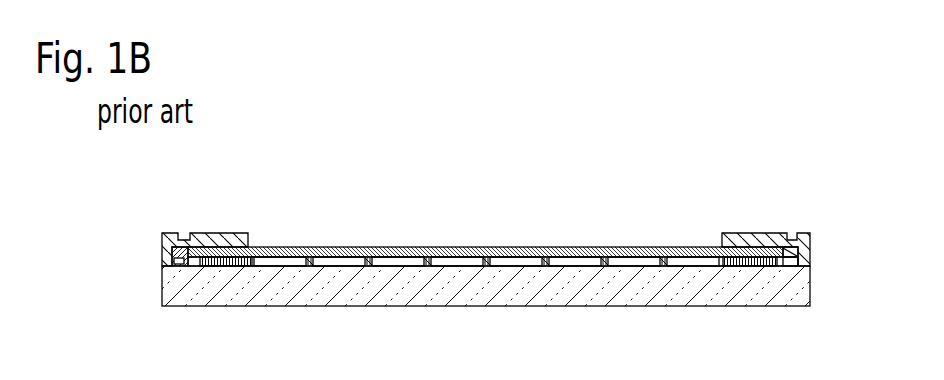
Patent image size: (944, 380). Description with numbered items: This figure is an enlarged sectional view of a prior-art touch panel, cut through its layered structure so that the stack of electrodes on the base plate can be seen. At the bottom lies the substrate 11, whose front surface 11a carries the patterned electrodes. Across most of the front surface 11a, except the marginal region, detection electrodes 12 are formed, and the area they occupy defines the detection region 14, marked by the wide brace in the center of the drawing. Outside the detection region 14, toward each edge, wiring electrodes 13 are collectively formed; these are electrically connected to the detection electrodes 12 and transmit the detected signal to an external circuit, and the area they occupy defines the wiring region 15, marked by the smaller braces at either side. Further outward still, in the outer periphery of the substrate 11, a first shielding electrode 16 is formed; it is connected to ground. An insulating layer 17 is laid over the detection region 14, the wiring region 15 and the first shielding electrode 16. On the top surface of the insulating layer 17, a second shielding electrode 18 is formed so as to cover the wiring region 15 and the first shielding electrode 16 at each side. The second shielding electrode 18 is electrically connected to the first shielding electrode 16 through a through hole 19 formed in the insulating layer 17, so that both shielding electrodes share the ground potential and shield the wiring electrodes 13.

The substrate 11 is at (810, 289).
The front surface 11a is at (601, 262).
The detection electrodes 12 is at (392, 262).
The wiring electrodes 13 is at (740, 262).
The detection region 14 is at (720, 207).
The wiring region 15 is at (247, 207).
The first shielding electrode 16 is at (175, 262).
The insulating layer 17 is at (497, 247).
The second shielding electrode 18 is at (184, 240).
The through hole 19 is at (788, 250).